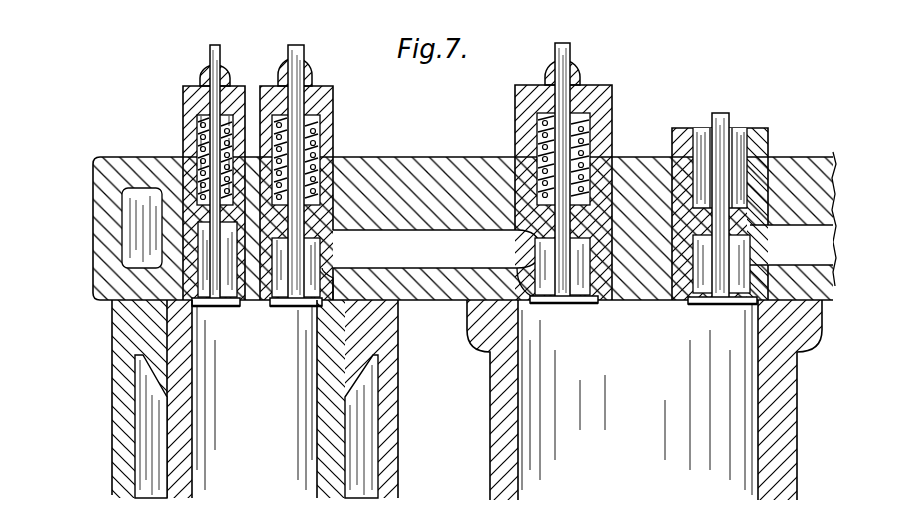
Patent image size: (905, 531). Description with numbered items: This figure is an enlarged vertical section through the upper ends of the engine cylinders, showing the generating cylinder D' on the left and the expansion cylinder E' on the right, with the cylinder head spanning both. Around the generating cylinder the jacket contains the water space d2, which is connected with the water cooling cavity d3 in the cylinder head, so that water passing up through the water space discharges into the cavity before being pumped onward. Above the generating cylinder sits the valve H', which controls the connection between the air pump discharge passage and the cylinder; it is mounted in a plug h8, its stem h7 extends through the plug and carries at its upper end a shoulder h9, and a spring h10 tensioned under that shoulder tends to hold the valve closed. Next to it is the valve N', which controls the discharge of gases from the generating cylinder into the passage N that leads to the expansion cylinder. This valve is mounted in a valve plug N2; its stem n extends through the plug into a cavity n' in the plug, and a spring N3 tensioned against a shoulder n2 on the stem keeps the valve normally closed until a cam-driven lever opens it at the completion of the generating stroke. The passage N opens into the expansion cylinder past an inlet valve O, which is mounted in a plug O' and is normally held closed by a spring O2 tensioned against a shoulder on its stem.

The stem h7 is at (221, 52).
The plug h8 is at (185, 110).
The shoulder h9 is at (205, 76).
The spring h10 is at (236, 110).
The valve H' is at (216, 320).
The stem n is at (321, 172).
The cavity n' is at (329, 151).
The shoulder n2 is at (312, 72).
The passage N is at (583, 261).
The valve N' is at (331, 269).
The valve plug N2 is at (328, 165).
The spring N3 is at (333, 120).
The water space d2 is at (145, 437).
The water cooling cavity d3 is at (142, 203).
The generating cylinder D' is at (255, 399).
The expansion cylinder E' is at (644, 400).
The inlet valve O is at (643, 319).
The plug O' is at (669, 206).
The spring O2 is at (600, 112).